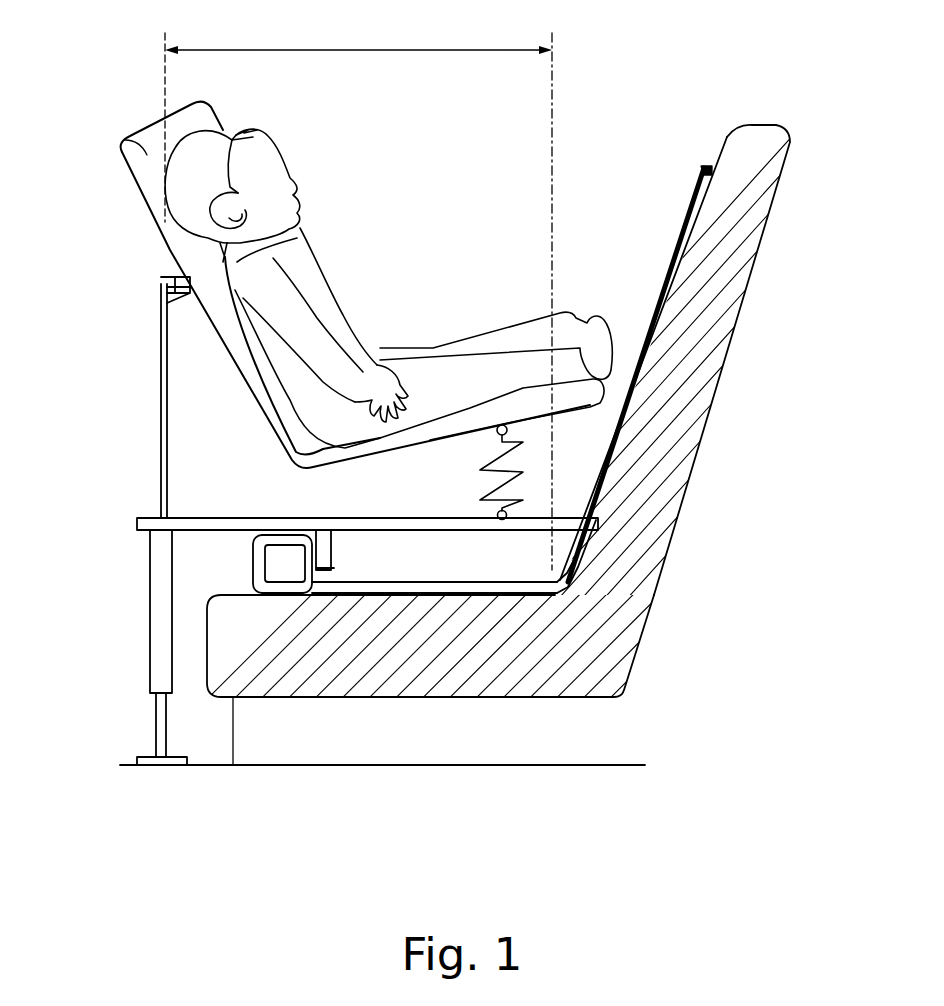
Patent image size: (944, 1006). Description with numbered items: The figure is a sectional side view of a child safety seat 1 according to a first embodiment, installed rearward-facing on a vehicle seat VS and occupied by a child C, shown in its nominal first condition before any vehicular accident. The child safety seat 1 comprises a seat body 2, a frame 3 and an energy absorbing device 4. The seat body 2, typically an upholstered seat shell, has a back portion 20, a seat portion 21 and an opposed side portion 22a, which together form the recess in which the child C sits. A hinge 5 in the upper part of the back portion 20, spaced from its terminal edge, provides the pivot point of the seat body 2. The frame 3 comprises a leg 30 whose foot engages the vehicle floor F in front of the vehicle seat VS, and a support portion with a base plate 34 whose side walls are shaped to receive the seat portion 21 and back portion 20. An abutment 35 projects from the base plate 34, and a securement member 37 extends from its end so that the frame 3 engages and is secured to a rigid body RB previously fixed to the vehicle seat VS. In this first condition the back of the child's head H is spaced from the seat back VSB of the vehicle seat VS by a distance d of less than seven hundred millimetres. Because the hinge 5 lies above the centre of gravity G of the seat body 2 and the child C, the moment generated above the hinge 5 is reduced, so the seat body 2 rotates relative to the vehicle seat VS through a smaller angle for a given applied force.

The child safety seat 1 is at (352, 157).
The seat body 2 is at (316, 283).
The frame 3 is at (406, 555).
The energy absorbing device 4 is at (530, 488).
The hinge 5 is at (190, 292).
The back portion 20 is at (237, 367).
The seat portion 21 is at (374, 457).
The side portion 22a is at (125, 140).
The leg 30 is at (131, 693).
The base plate 34 is at (223, 530).
The abutment 35 is at (331, 570).
The securement member 37 is at (602, 527).
The child C is at (359, 254).
The centre of gravity G is at (303, 327).
The head H is at (190, 152).
The floor F is at (497, 767).
The vehicle seat VS is at (733, 367).
The seat back VSB is at (723, 272).
The rigid body RB is at (686, 217).
The distance d is at (358, 297).